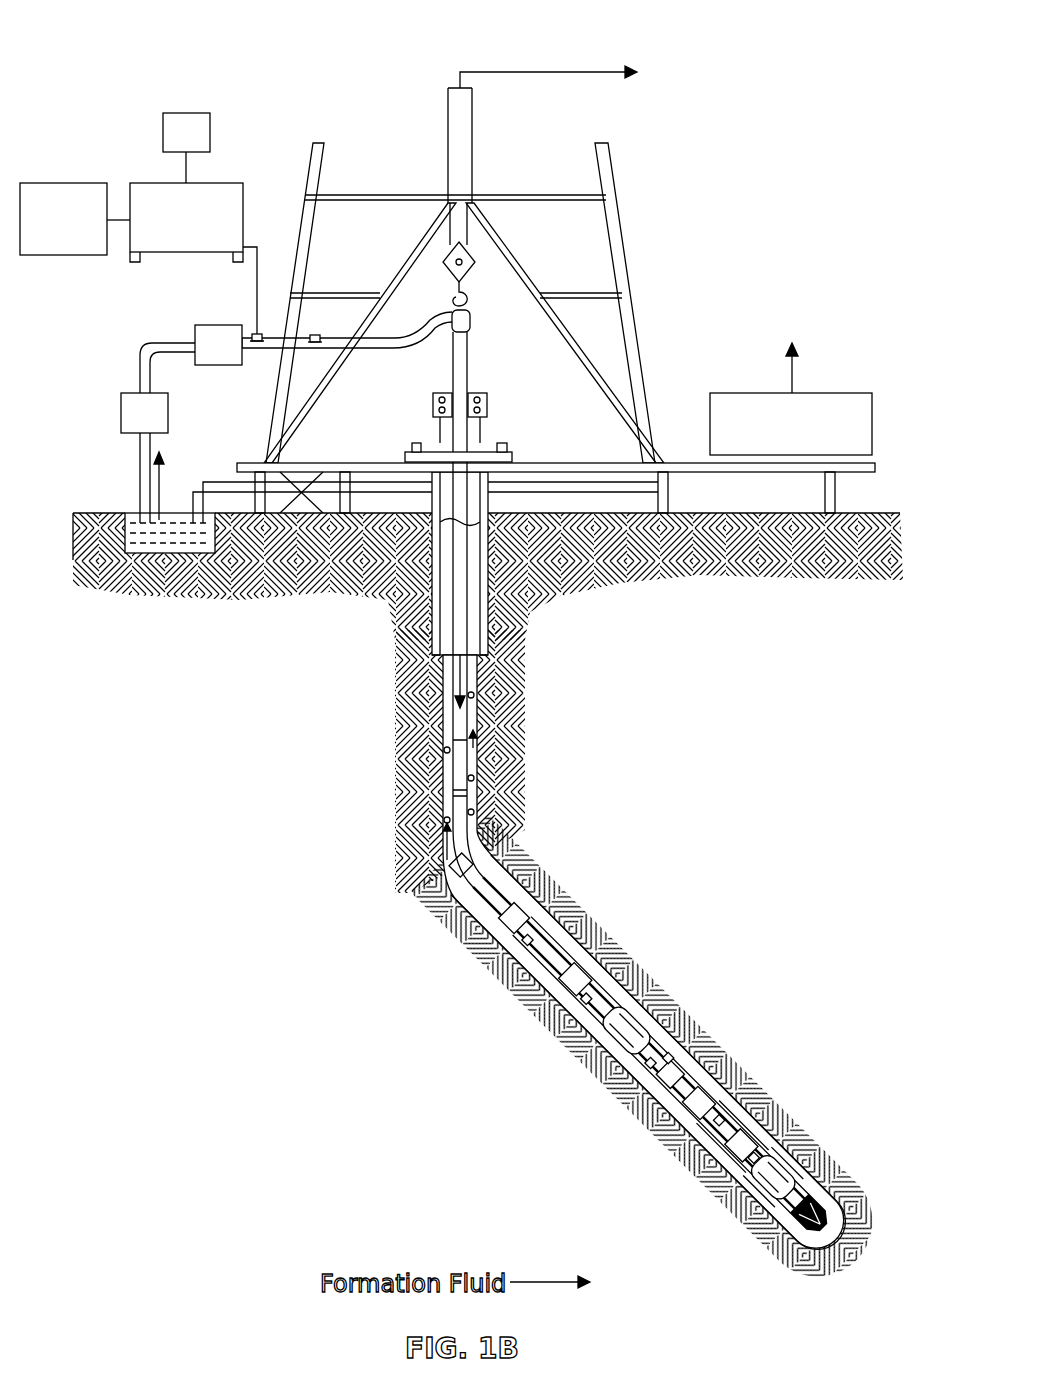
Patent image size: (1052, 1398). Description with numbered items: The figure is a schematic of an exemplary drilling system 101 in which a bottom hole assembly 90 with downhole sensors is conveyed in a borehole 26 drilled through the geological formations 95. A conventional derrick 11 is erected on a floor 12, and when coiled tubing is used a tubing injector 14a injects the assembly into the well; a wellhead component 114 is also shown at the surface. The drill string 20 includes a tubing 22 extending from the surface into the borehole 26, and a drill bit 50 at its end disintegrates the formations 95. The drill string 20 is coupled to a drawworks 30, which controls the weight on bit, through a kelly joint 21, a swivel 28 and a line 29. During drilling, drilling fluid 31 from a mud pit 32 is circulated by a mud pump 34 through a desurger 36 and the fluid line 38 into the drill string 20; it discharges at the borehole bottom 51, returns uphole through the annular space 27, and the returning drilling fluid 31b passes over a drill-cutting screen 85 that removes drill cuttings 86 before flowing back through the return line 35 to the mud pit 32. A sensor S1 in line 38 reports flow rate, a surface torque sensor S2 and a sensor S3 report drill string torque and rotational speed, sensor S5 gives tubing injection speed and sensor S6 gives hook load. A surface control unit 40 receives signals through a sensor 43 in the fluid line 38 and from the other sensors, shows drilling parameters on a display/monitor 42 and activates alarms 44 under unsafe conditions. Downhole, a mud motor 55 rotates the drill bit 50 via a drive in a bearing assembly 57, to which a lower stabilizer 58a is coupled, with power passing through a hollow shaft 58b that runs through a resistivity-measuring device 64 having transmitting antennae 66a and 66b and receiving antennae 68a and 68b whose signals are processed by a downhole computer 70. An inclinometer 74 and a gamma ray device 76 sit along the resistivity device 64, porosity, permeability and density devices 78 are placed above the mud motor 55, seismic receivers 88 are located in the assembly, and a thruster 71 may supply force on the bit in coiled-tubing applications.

The drilling system 101 is at (113, 36).
The derrick 11 is at (633, 310).
The floor 12 is at (652, 460).
The tubing injector 14a is at (487, 407).
The wellhead 114 is at (512, 448).
The drill string 20 is at (482, 722).
The kelly joint 21 is at (469, 380).
The tubing 22 is at (448, 740).
The borehole 26 is at (482, 833).
The annular space 27 is at (503, 877).
The swivel 28 is at (447, 328).
The line 29 is at (478, 166).
The drawworks 30 is at (825, 393).
The drilling fluid 31 is at (130, 545).
The returning drilling fluid 31b is at (442, 846).
The mud pit 32 is at (190, 470).
The mud pump 34 is at (121, 413).
The return line 35 is at (368, 495).
The desurger 36 is at (195, 340).
The fluid line 38 is at (273, 352).
The surface control unit 40 is at (160, 183).
The display/monitor 42 is at (186, 113).
The sensor 43 is at (256, 333).
The alarms 44 is at (85, 183).
The drill bit 50 is at (832, 1192).
The borehole bottom 51 is at (793, 1257).
The downhole motor 55 is at (560, 930).
The bearing assembly 57 is at (795, 1142).
The lower stabilizer 58a is at (795, 1152).
The hollow shaft 58b is at (627, 1028).
The resistivity-measuring device 64 is at (690, 1122).
The transmitting antenna 66a is at (655, 1065).
The transmitting antenna 66b is at (705, 1145).
The receiving antenna 68a is at (660, 1093).
The receiving antenna 68b is at (690, 1060).
The downhole computer 70 is at (495, 912).
The thruster 71 is at (732, 1160).
The inclinometer 74 is at (712, 1082).
The gamma ray device 76 is at (738, 1100).
The formation porosity, permeability and density measuring devices 78 is at (490, 903).
The drill-cutting screen 85 is at (295, 462).
The drill cuttings 86 is at (480, 780).
The seismic receivers 88 is at (760, 1115).
The bottom hole assembly 90 is at (760, 950).
The geological formations 95 is at (768, 761).
The sensor S1 is at (314, 335).
The surface torque sensor S2 is at (522, 466).
The sensor S3 is at (407, 452).
The sensor S5 is at (470, 345).
The sensor S6 is at (474, 300).